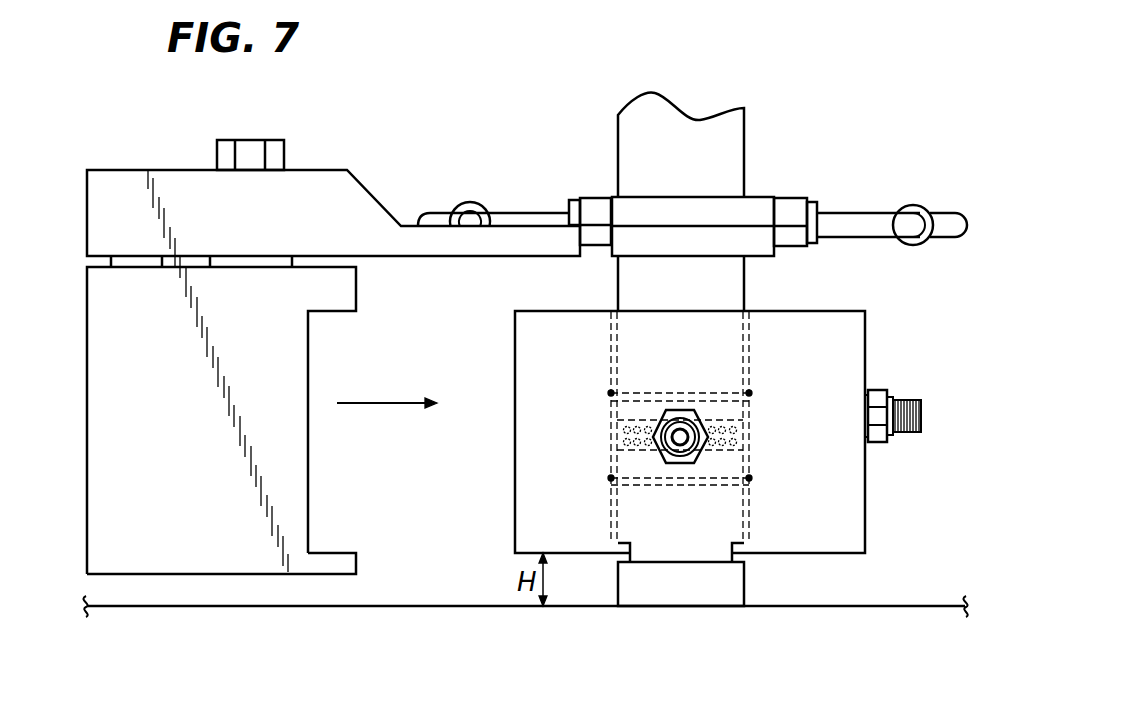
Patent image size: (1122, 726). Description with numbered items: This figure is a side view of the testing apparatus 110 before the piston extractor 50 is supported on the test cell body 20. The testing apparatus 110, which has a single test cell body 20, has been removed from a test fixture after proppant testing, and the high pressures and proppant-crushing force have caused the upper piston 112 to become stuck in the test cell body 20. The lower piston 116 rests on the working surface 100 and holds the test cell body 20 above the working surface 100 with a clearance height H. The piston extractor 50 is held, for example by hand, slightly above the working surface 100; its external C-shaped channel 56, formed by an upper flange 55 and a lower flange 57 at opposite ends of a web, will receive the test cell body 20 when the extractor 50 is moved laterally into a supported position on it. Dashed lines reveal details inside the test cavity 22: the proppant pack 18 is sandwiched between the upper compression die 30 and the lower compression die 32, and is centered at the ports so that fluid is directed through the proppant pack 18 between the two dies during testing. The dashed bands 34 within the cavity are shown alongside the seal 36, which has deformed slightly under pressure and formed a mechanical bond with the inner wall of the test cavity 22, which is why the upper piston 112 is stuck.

The proppant pack 18 is at (627, 431).
The test cell body 20 is at (853, 340).
The test cavity 22 is at (750, 330).
The upper compression die 30 is at (641, 410).
The lower compression die 32 is at (653, 464).
The bands 34 is at (718, 398).
The seal 36 is at (750, 393).
The piston extractor 50 is at (345, 158).
The upper flange 55 is at (356, 288).
The C-shaped channel 56 is at (345, 358).
The lower flange 57 is at (340, 553).
The working surface 100 is at (901, 604).
The testing apparatus 110 is at (456, 148).
The upper piston 112 is at (744, 138).
The lower piston 116 is at (744, 578).